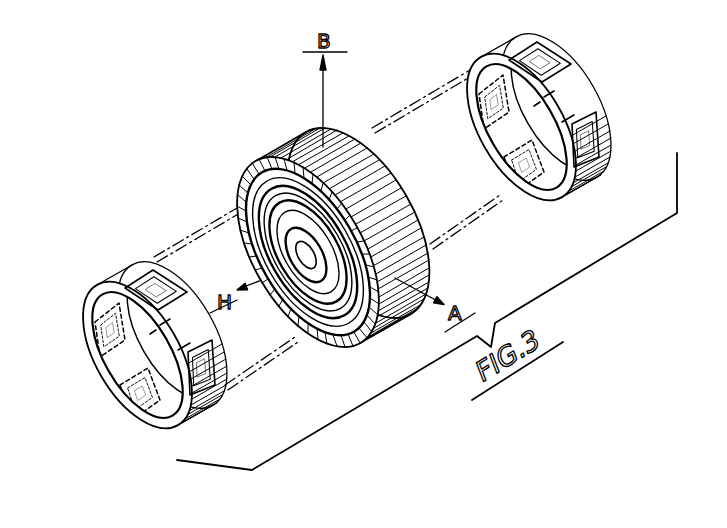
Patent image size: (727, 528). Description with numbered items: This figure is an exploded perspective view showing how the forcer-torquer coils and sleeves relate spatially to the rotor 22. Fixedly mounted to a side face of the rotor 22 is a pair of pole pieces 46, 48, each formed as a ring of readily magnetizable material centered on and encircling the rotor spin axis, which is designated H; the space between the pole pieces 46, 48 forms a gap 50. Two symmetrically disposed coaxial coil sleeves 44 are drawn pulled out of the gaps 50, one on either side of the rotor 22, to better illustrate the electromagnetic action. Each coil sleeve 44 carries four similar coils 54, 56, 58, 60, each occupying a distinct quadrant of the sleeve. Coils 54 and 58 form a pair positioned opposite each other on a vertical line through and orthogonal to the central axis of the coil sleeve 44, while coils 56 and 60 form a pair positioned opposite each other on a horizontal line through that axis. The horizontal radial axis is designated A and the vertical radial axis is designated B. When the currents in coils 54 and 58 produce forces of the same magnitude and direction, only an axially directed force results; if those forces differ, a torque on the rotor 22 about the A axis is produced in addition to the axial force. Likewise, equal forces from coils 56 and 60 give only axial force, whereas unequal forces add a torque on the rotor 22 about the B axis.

The rotor 22 is at (370, 189).
The coil sleeve 44 is at (157, 428).
The pole piece 46 is at (272, 168).
The pole piece 48 is at (254, 260).
The gap 50 is at (300, 303).
The coil 54 is at (151, 263).
The coil 56 is at (95, 343).
The coil 58 is at (116, 400).
The coil 60 is at (194, 400).